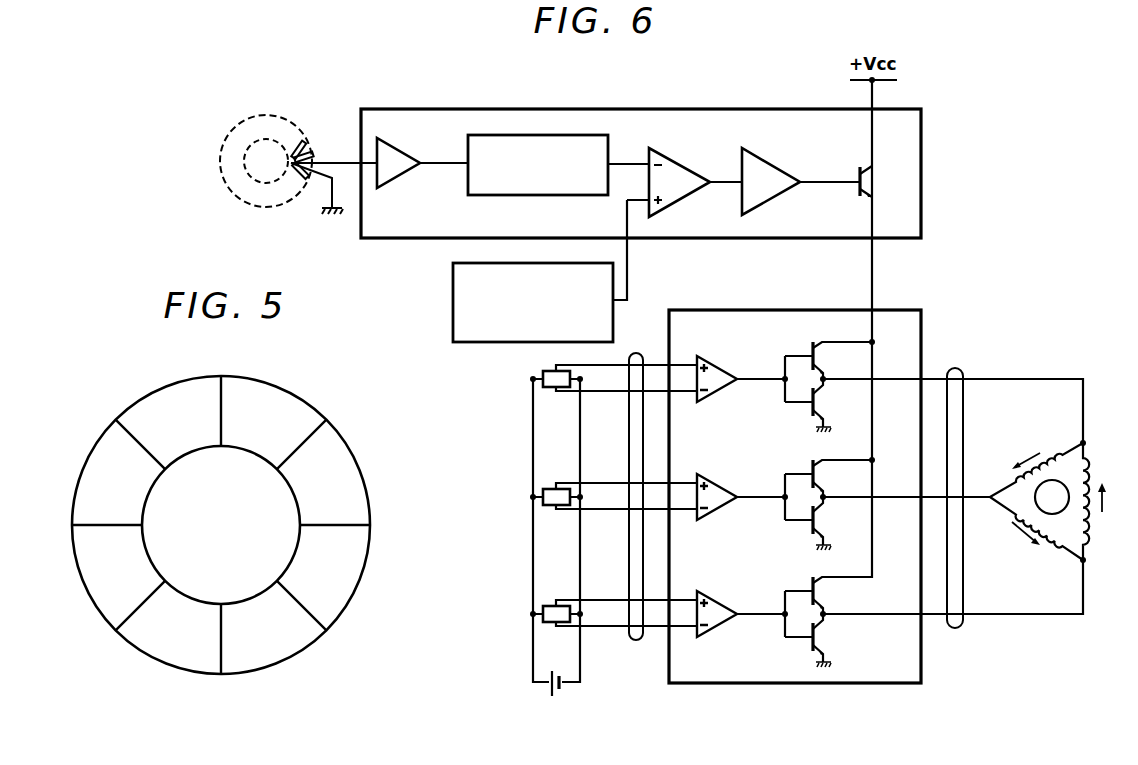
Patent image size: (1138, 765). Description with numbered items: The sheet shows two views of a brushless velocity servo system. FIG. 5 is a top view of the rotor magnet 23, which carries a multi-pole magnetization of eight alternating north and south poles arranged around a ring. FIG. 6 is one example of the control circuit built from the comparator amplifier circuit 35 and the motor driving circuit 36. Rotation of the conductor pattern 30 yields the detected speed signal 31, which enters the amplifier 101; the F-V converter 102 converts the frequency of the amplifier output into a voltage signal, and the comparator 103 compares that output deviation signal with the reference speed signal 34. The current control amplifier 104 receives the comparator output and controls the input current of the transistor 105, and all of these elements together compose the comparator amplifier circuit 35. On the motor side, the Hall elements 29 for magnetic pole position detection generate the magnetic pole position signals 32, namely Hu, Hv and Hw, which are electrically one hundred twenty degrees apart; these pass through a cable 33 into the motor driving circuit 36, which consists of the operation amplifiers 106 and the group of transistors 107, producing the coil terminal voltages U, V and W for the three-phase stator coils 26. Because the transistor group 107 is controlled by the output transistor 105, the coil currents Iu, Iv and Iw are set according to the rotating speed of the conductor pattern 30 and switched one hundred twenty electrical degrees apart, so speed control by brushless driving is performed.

In FIG. 5, the rotor magnet 23 is at (300, 405).
In FIG. 6, the stator coil 26 is at (1064, 449).
In FIG. 6, the Hall element 29 is at (548, 390).
In FIG. 6, the conductor pattern 30 is at (272, 123).
In FIG. 6, the detected speed signal 31 is at (343, 160).
In FIG. 6, the magnetic pole position signal 32 is at (630, 636).
In FIG. 6, the cable 33 is at (963, 372).
In FIG. 6, the reference speed signal 34 is at (456, 303).
In FIG. 6, the comparator amplifier circuit 35 is at (908, 130).
In FIG. 6, the motor driving circuit 36 is at (906, 322).
In FIG. 6, the amplifier 101 is at (399, 146).
In FIG. 6, the F-V converter 102 is at (553, 135).
In FIG. 6, the comparator 103 is at (681, 162).
In FIG. 6, the current control amplifier 104 is at (777, 160).
In FIG. 6, the transistor 105 is at (877, 178).
In FIG. 6, the operation amplifier 106 is at (727, 371).
In FIG. 6, the transistor group 107 is at (812, 352).